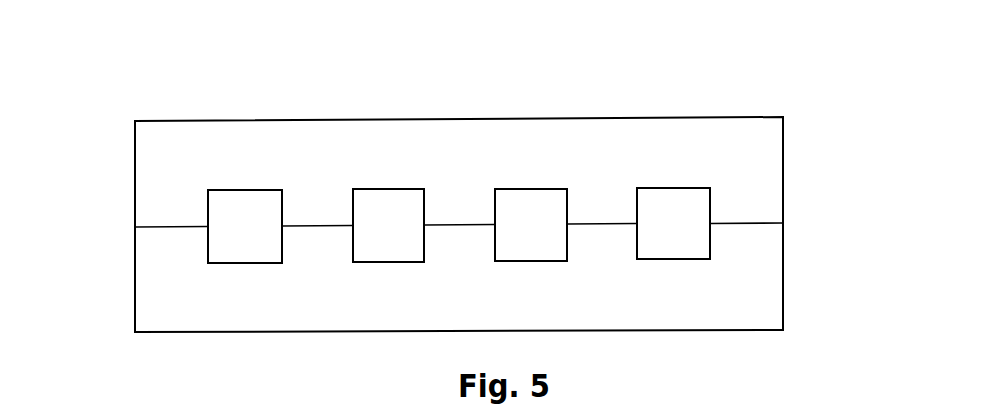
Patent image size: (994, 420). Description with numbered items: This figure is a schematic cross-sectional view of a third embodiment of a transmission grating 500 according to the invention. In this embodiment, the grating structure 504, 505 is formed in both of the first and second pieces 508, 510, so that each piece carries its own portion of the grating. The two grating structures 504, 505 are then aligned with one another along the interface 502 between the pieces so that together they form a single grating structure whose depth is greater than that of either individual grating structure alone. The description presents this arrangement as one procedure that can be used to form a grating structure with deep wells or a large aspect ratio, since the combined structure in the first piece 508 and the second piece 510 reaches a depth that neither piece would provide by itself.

The optical device 500 is at (487, 92).
The waveguide 502 is at (135, 227).
The grating structure 504 is at (652, 247).
The grating structure 505 is at (235, 208).
The first piece 508 is at (783, 293).
The second piece 510 is at (783, 187).